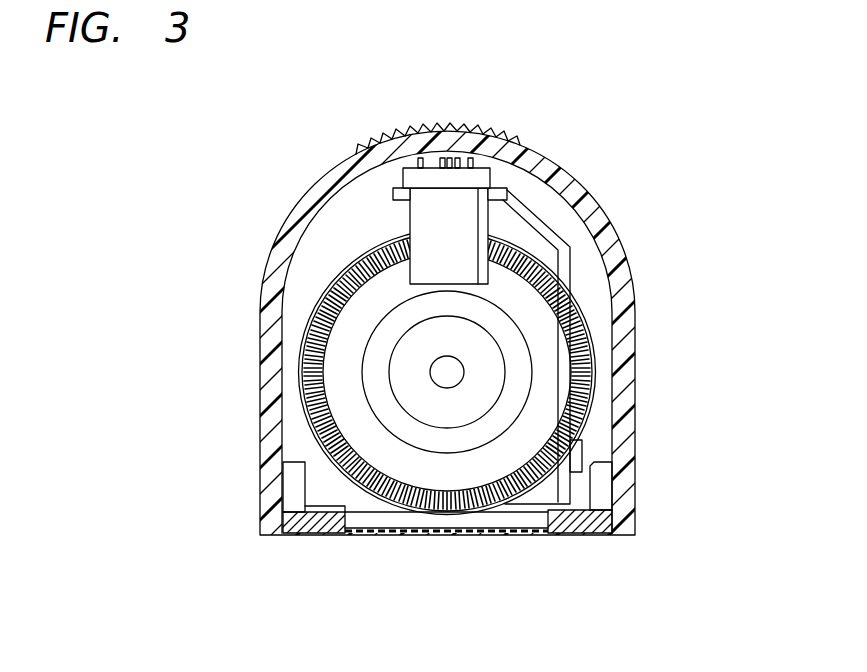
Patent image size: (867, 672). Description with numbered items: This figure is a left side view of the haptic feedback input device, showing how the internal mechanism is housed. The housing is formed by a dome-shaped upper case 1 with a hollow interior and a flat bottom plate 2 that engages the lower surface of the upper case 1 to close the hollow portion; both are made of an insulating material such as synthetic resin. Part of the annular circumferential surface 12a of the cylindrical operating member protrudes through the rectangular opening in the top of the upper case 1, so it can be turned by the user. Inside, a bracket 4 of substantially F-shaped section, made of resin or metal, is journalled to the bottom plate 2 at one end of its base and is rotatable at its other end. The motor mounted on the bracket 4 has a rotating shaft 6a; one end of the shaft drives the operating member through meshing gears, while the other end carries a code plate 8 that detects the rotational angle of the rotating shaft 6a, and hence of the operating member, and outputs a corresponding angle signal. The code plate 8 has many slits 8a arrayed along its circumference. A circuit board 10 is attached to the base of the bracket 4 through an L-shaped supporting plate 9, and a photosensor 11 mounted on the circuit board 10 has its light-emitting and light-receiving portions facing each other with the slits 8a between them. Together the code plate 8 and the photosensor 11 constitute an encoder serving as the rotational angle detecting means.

The upper case 1 is at (257, 455).
The bottom plate 2 is at (571, 537).
The bracket 4 is at (328, 492).
The rotating shaft 6a is at (447, 376).
The code plate 8 is at (303, 312).
The slits 8a is at (335, 273).
The L-shaped supporting plate 9 is at (537, 217).
The circuit board 10 is at (485, 172).
The photosensor 11 is at (422, 218).
The annular circumferential surface 12a is at (460, 125).